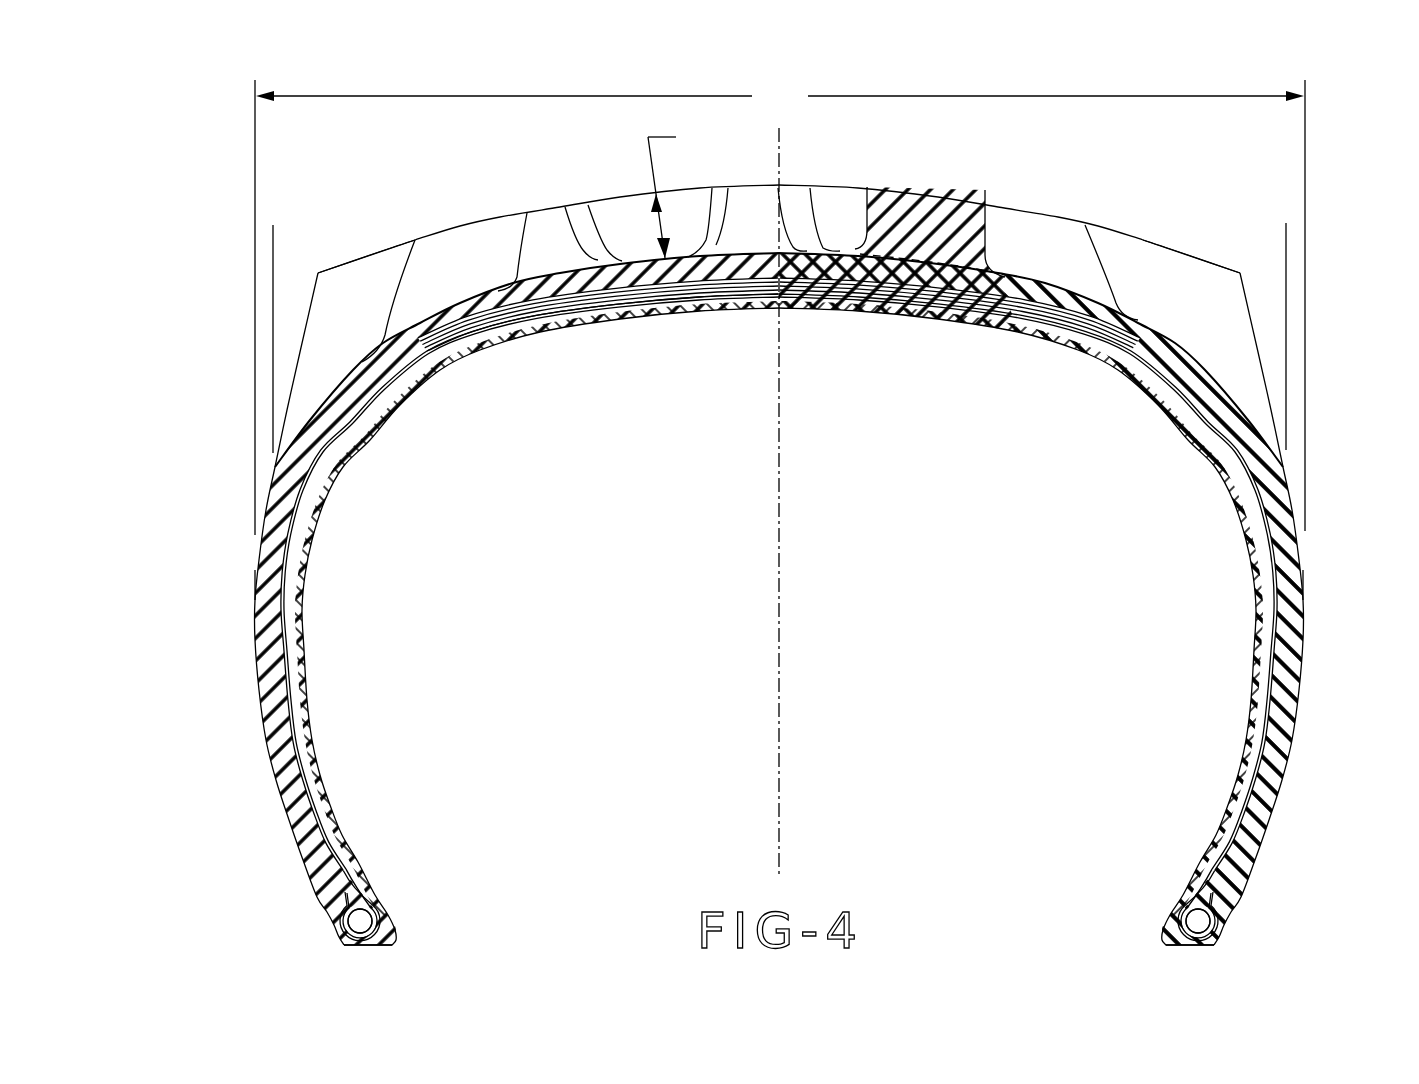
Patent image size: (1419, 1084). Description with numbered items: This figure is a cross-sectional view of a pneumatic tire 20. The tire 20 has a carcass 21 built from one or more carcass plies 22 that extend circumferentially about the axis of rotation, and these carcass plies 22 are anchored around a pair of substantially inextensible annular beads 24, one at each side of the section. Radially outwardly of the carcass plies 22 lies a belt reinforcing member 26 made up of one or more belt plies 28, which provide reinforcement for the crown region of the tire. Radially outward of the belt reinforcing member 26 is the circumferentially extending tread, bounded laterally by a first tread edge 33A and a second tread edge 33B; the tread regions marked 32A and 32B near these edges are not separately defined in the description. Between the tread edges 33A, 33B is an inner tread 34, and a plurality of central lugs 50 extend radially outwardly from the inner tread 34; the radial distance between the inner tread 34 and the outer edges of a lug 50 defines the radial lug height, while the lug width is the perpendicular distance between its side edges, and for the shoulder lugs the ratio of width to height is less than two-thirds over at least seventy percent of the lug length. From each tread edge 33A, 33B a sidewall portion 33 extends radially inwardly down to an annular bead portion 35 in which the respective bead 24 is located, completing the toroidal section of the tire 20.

The pneumatic tire 20 is at (737, 531).
The carcass 21 is at (262, 673).
The carcass plies 22 is at (310, 788).
The annular beads 24 is at (364, 920).
The belt reinforcing member 26 is at (538, 330).
The belt plies 28 is at (657, 306).
The tread shoulder 32A is at (1122, 228).
The tread shoulder 32B is at (436, 230).
The sidewall portion 33 is at (258, 587).
The first tread edge 33A is at (1296, 273).
The second tread edge 33B is at (271, 275).
The inner tread 34 is at (779, 241).
The annular bead portion 35 is at (302, 860).
The central lugs 50 is at (962, 194).